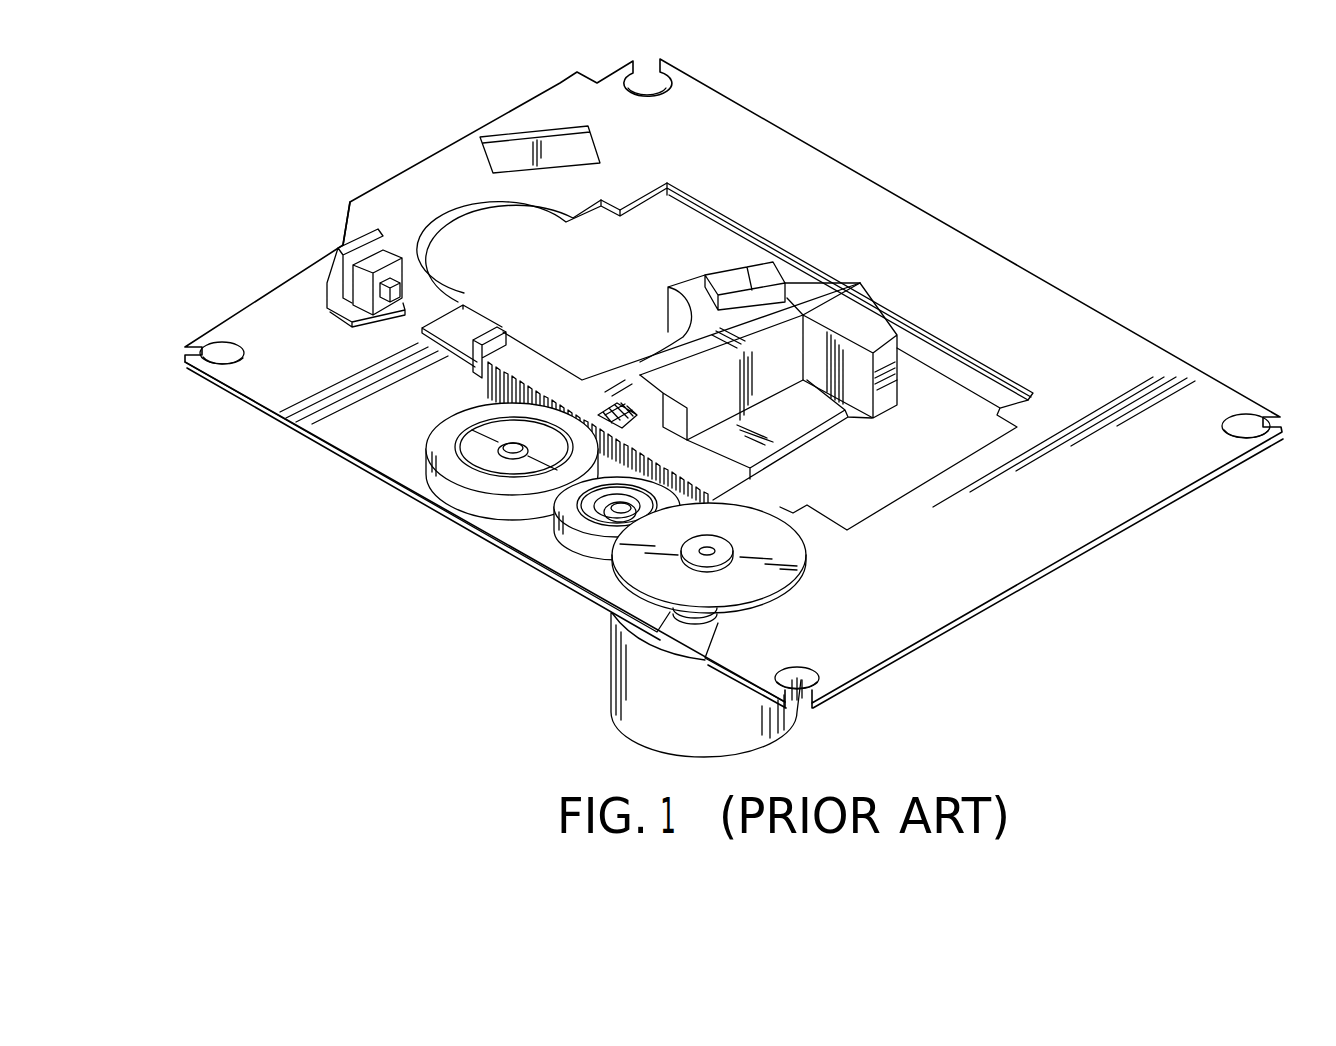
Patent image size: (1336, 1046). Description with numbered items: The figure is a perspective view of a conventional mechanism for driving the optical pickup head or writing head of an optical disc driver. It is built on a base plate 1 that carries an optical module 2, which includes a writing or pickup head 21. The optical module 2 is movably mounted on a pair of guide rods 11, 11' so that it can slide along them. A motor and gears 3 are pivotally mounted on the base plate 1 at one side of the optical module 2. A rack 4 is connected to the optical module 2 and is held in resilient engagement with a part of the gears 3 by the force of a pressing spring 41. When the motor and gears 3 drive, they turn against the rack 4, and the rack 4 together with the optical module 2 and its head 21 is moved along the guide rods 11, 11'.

The base plate 1 is at (903, 200).
The guide rod 11 is at (725, 277).
The guide rod 11' is at (448, 232).
The optical module 2 is at (757, 267).
The writing or pickup head 21 is at (873, 317).
The motor and gears 3 is at (420, 513).
The rack 4 is at (483, 392).
The pressing spring 41 is at (612, 413).